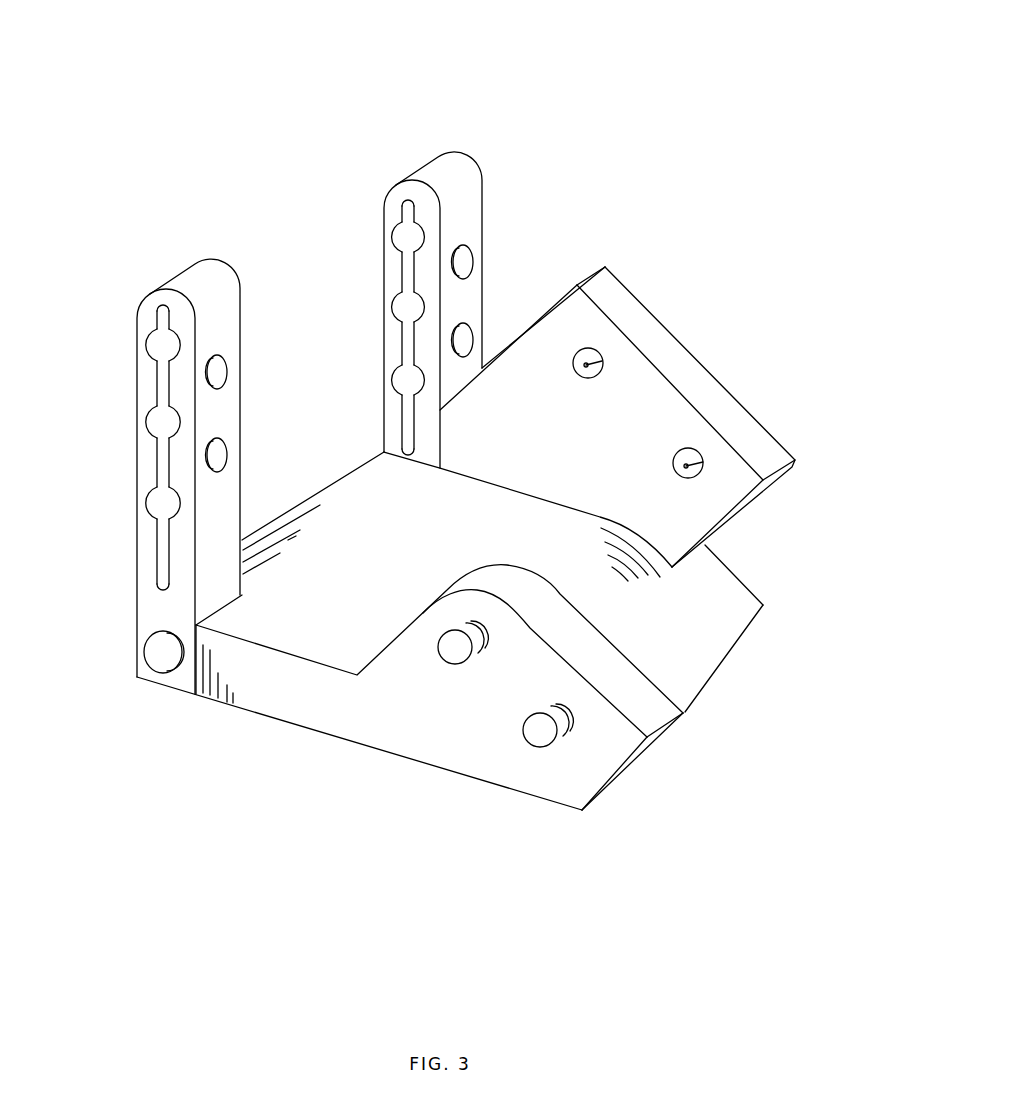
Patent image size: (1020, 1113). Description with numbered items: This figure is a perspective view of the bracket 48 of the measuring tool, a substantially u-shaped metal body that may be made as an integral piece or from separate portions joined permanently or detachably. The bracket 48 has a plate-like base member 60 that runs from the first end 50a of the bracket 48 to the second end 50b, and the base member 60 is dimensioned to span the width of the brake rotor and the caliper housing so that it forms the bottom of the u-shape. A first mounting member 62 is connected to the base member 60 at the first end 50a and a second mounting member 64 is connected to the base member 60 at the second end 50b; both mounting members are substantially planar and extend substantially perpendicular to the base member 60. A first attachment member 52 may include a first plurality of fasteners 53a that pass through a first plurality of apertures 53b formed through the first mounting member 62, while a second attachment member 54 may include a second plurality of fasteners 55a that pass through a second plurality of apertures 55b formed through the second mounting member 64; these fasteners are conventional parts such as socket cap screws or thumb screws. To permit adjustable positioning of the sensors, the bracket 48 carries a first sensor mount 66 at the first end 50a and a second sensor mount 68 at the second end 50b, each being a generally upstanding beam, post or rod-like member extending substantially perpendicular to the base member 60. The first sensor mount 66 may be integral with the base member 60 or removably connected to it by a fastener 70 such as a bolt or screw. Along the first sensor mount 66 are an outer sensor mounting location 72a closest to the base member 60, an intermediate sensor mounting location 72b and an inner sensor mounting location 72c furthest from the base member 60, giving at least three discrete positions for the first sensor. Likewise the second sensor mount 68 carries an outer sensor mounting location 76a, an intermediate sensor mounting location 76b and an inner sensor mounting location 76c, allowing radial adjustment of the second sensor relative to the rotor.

The bracket 48 is at (683, 152).
The first end of the bracket 50a is at (270, 720).
The second end of the bracket 50b is at (755, 588).
The first attachment member 52 is at (500, 760).
The first plurality of fasteners 53a is at (453, 648).
The first plurality of apertures 53b is at (488, 636).
The second attachment member 54 is at (743, 313).
The second plurality of fasteners 55a is at (577, 365).
The second plurality of apertures 55b is at (600, 362).
The base member 60 is at (728, 650).
The first mounting member 62 is at (646, 674).
The second mounting member 64 is at (617, 278).
The first sensor mount 66 is at (242, 350).
The second sensor mount 68 is at (482, 193).
The fastener 70 is at (162, 660).
The outer sensor mounting location 72a is at (160, 502).
The intermediate sensor mounting location 72b is at (160, 421).
The inner sensor mounting location 72c is at (160, 343).
The outer sensor mounting location 76a is at (406, 380).
The intermediate sensor mounting location 76b is at (406, 308).
The inner sensor mounting location 76c is at (406, 237).